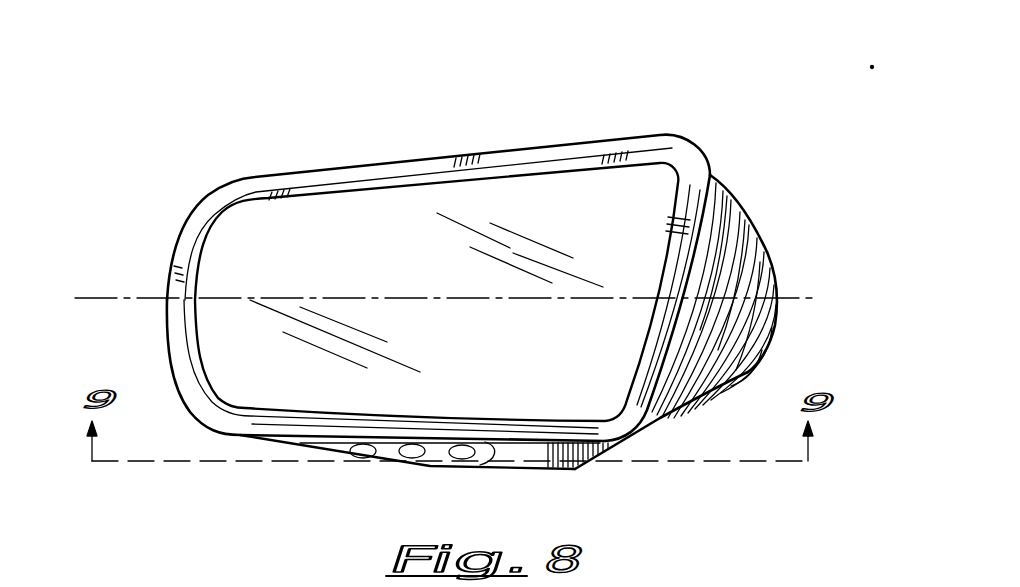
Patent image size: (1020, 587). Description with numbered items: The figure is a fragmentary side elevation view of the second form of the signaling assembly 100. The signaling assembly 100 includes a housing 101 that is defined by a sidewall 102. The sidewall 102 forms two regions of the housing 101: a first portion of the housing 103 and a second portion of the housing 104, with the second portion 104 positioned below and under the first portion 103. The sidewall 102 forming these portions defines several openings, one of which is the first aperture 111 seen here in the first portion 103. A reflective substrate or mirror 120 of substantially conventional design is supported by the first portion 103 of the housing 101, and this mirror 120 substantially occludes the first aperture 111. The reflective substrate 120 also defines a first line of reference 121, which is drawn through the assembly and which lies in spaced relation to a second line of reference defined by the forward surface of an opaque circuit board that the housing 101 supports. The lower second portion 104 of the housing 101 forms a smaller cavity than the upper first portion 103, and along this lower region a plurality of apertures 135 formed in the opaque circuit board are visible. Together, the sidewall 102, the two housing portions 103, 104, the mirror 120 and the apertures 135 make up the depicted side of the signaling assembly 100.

The signaling assembly 100 is at (696, 62).
The first aperture 111 is at (252, 204).
The reflective substrate 120 is at (455, 250).
The housing 101 is at (708, 243).
The first line of reference 121 is at (777, 298).
The first portion of the housing 103 is at (753, 308).
The sidewall 102 is at (677, 413).
The second portion of the housing 104 is at (530, 457).
The apertures 135 is at (413, 443).